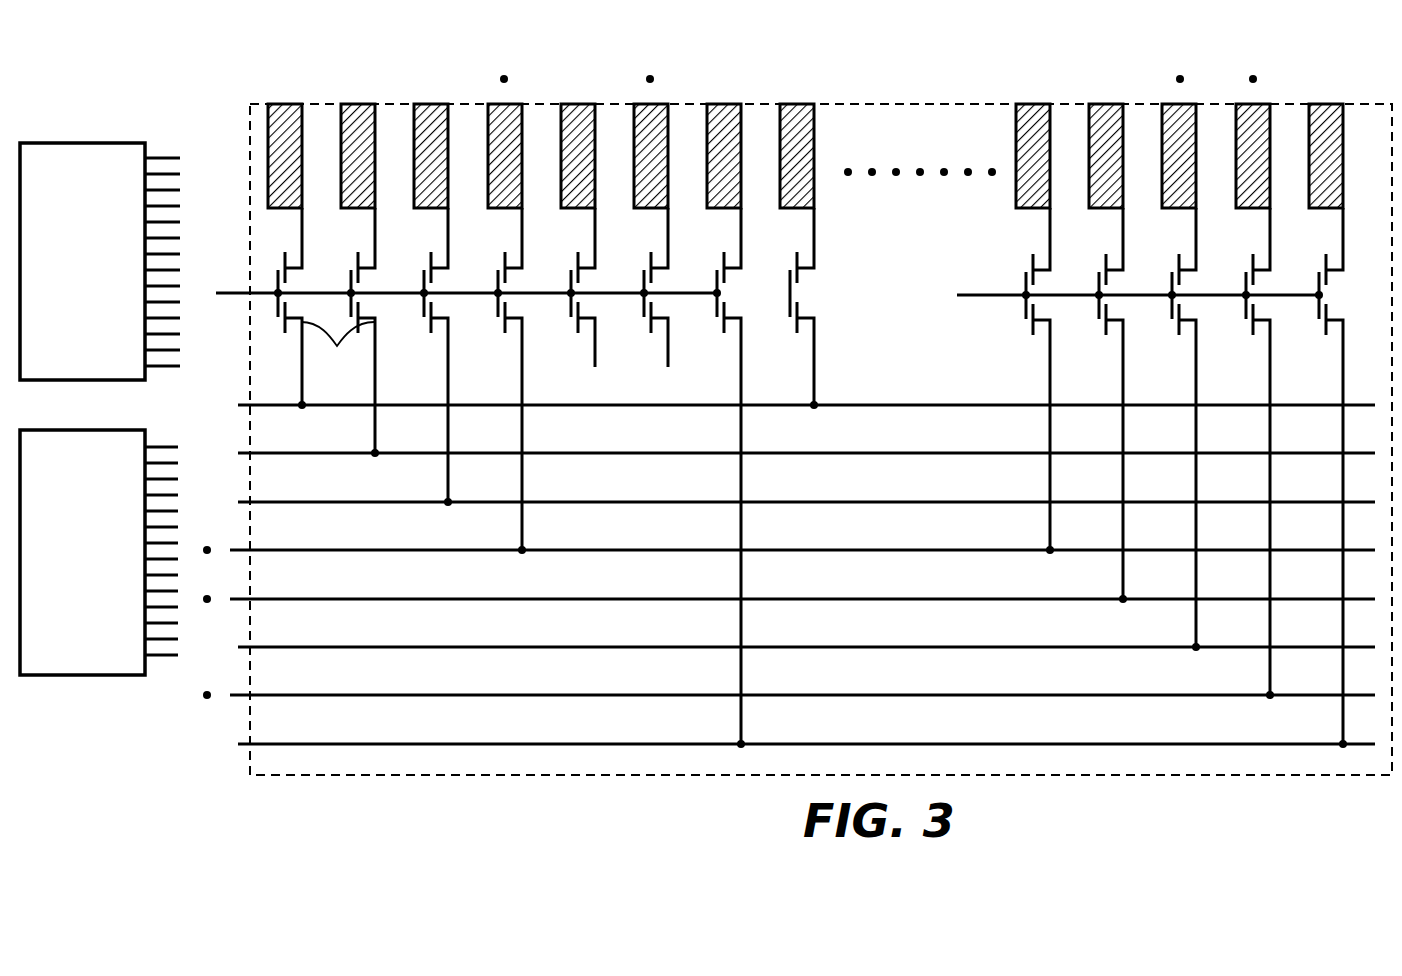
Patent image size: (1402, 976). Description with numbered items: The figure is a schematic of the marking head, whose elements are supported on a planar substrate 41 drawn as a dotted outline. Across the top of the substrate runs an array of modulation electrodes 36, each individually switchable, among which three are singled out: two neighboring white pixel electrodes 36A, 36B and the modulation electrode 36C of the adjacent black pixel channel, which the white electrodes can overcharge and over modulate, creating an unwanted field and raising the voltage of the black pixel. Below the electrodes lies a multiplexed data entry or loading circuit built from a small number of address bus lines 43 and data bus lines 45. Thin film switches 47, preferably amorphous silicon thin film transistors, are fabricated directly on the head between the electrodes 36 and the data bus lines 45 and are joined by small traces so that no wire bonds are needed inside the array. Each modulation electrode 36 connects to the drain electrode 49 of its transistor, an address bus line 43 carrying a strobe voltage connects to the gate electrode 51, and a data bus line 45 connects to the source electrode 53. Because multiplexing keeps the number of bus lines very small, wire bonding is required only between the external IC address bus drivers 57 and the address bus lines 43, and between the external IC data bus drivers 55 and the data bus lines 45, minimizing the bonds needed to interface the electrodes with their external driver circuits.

The modulation electrodes 36 is at (341, 130).
The white pixel electrode 36A is at (512, 104).
The white pixel electrode 36B is at (663, 104).
The modulation electrode of black pixel channel 36C is at (594, 104).
The planar substrate 41 is at (1367, 104).
The address bus lines 43 is at (237, 297).
The data bus lines 45 is at (893, 405).
The thin film switches 47 is at (279, 279).
The drain electrode 49 is at (1105, 259).
The gate electrode 51 is at (276, 319).
The source electrode 53 is at (337, 346).
The external IC data bus drivers 55 is at (70, 678).
The external IC address bus drivers 57 is at (81, 143).